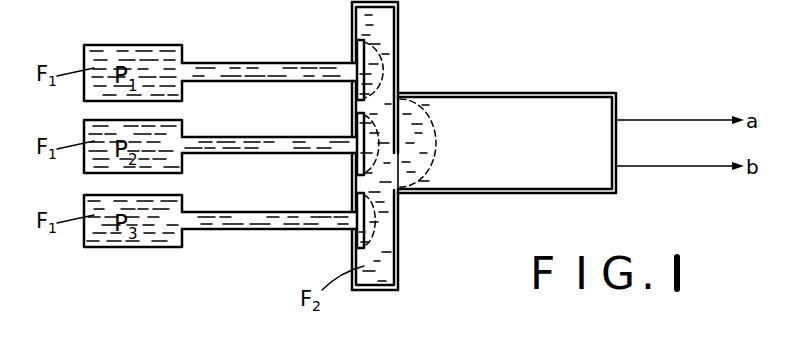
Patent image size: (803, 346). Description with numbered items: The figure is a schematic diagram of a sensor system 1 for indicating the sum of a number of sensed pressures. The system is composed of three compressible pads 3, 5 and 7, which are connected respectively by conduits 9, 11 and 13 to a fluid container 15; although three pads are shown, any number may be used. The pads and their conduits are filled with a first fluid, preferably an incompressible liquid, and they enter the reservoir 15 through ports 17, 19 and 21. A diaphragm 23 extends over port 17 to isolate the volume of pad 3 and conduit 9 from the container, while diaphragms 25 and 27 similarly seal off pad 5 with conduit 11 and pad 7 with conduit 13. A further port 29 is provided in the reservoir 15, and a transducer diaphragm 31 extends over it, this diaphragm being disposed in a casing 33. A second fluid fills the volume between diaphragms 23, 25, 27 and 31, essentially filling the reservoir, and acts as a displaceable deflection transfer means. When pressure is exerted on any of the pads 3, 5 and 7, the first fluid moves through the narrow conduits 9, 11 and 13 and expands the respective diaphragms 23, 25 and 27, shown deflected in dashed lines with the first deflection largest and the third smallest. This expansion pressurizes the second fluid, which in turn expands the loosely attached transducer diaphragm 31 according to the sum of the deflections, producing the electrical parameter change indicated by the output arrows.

The sensor system 1 is at (252, 237).
The compressible pad 3 is at (166, 45).
The compressible pad 5 is at (173, 120).
The compressible pad 7 is at (173, 195).
The conduit 9 is at (233, 63).
The conduit 11 is at (231, 137).
The conduit 13 is at (231, 212).
The fluid container 15 is at (402, 262).
The port 17 is at (352, 85).
The port 19 is at (353, 154).
The port 21 is at (354, 231).
The diaphragm 23 is at (349, 46).
The diaphragm 25 is at (347, 130).
The diaphragm 27 is at (347, 201).
The port 29 is at (395, 152).
The transducer diaphragm 31 is at (426, 112).
The casing 33 is at (527, 95).